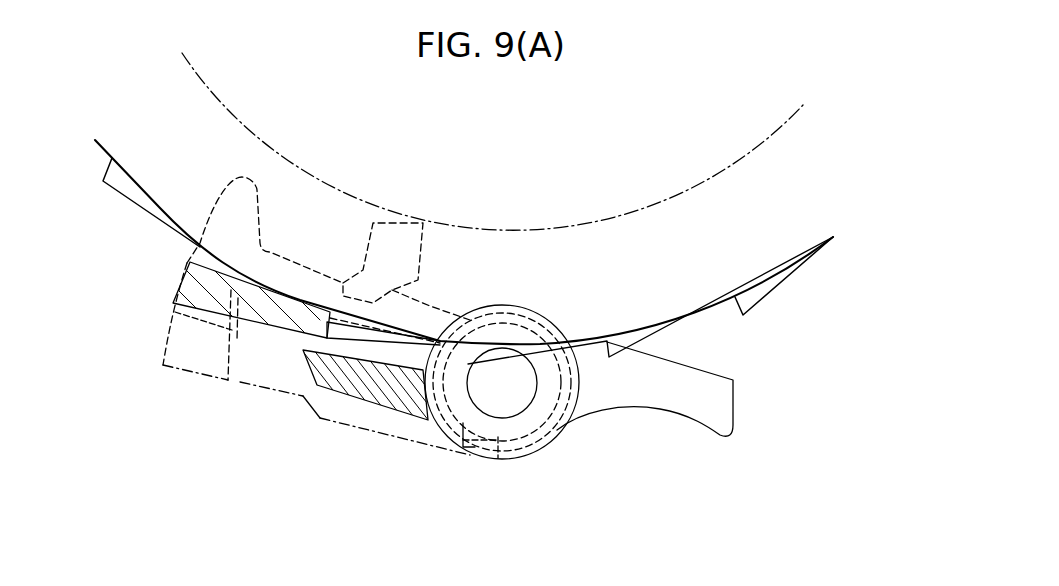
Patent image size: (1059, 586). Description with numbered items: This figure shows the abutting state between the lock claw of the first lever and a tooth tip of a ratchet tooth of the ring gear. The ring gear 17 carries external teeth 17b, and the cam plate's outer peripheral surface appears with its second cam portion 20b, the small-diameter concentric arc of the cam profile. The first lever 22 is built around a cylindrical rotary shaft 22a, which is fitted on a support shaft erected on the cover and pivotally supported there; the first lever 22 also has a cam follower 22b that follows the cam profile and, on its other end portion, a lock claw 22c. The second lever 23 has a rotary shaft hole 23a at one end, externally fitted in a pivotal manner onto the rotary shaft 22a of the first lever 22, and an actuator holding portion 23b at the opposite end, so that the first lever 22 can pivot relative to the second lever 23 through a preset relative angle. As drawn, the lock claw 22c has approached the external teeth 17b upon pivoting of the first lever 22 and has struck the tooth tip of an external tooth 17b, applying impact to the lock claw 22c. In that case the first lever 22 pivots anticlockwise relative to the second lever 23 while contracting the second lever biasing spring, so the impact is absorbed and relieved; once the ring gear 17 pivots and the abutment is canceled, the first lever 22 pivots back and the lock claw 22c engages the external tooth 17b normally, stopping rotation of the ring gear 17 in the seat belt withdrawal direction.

The ring gear 17 is at (119, 143).
The external tooth 17b is at (205, 262).
The second cam portion 20b is at (673, 197).
The first lever 22 is at (303, 248).
The rotary shaft 22a is at (498, 437).
The cam follower 22b is at (440, 250).
The lock claw 22c is at (193, 289).
The second lever 23 is at (259, 399).
The rotary shaft hole 23a is at (532, 432).
The actuator holding portion 23b is at (165, 368).